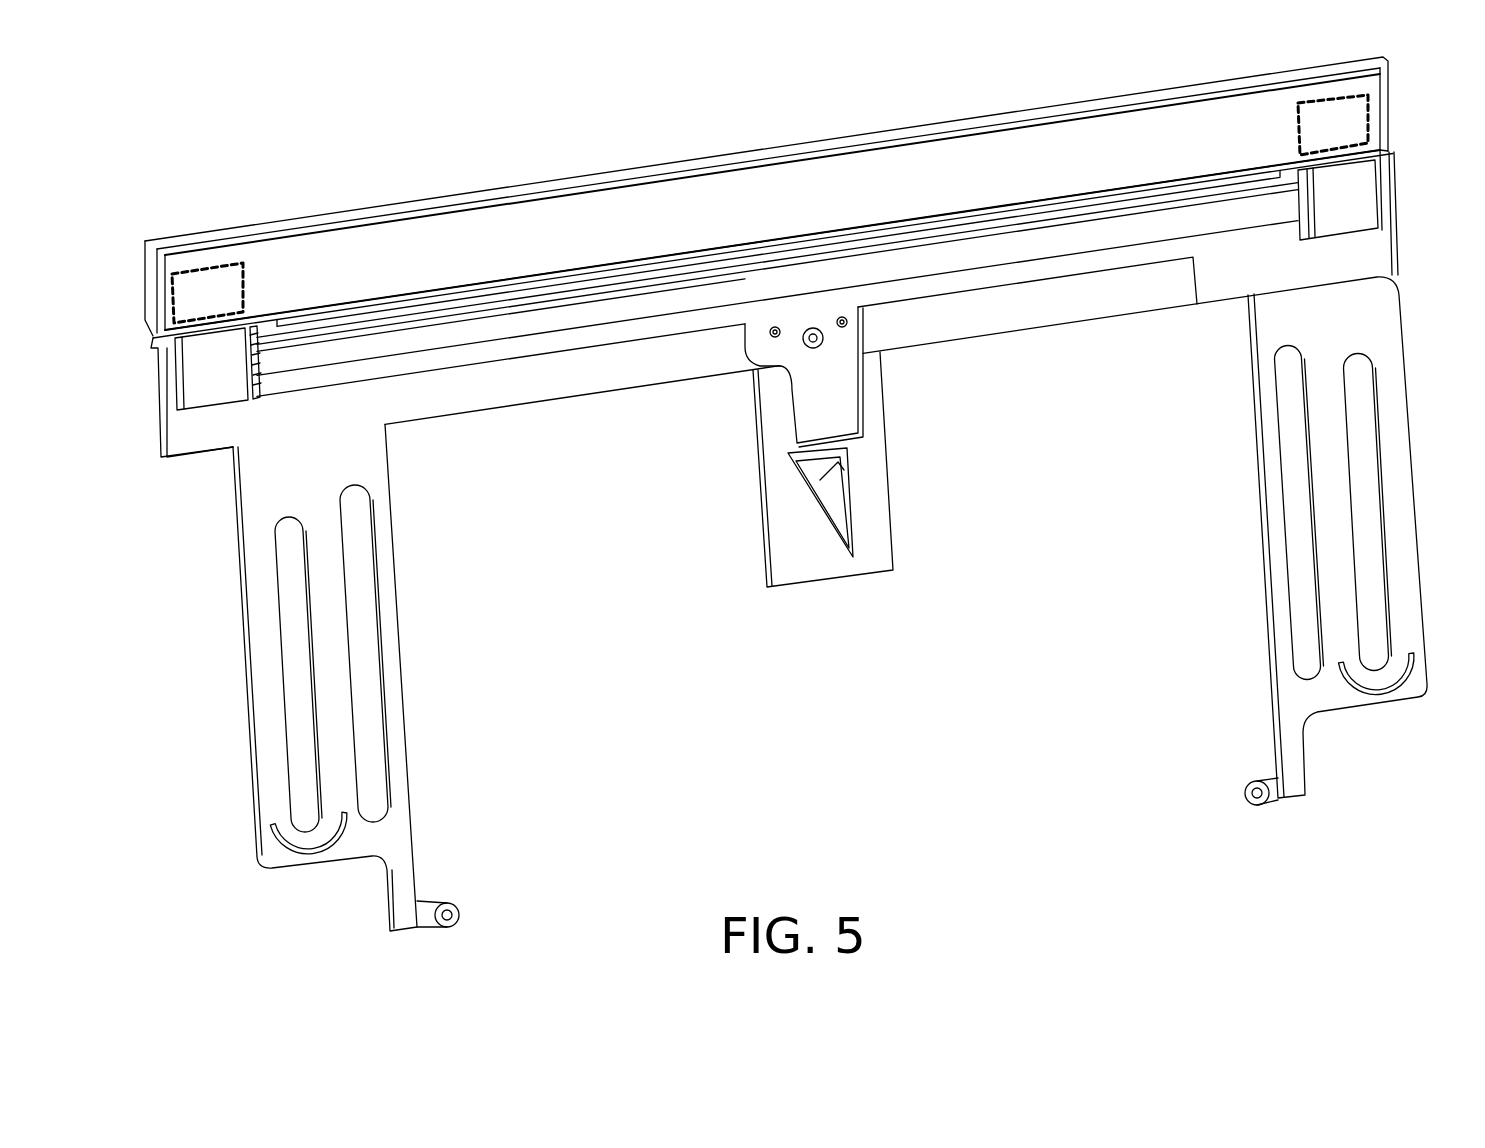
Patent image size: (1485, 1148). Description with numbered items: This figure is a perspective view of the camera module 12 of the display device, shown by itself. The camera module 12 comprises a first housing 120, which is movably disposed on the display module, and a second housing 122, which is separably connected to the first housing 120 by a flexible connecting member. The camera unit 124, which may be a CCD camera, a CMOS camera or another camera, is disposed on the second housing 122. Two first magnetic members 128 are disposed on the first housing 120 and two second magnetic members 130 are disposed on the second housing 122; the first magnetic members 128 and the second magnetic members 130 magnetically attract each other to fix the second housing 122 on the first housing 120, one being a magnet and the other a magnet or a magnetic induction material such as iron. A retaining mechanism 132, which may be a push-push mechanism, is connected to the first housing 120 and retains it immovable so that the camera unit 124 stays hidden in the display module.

The camera module 12 is at (503, 140).
The first housing 120 is at (155, 409).
The second housing 122 is at (657, 162).
The camera unit 124 is at (775, 208).
The first magnetic member 128 is at (230, 368).
The second magnetic member 130 is at (210, 277).
The retaining mechanism 132 is at (893, 500).